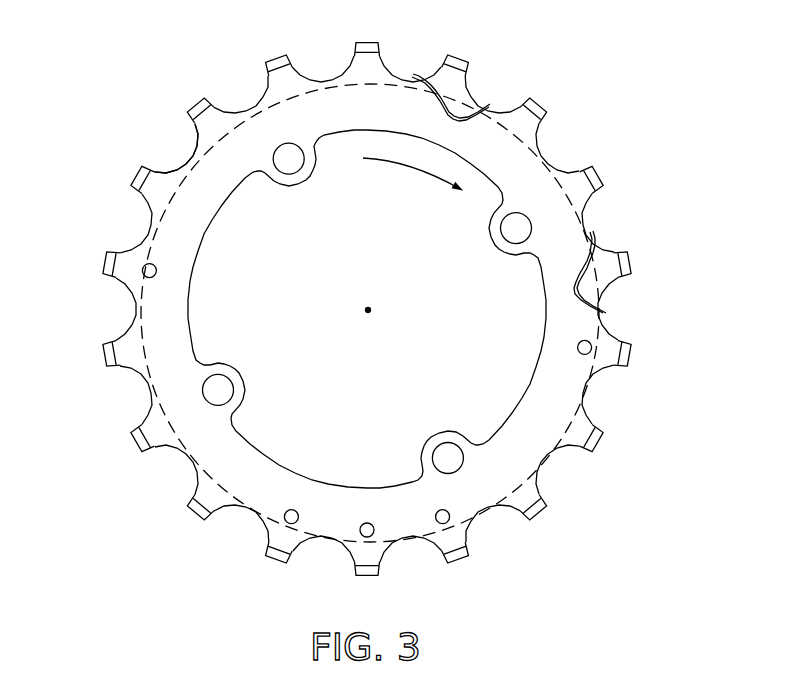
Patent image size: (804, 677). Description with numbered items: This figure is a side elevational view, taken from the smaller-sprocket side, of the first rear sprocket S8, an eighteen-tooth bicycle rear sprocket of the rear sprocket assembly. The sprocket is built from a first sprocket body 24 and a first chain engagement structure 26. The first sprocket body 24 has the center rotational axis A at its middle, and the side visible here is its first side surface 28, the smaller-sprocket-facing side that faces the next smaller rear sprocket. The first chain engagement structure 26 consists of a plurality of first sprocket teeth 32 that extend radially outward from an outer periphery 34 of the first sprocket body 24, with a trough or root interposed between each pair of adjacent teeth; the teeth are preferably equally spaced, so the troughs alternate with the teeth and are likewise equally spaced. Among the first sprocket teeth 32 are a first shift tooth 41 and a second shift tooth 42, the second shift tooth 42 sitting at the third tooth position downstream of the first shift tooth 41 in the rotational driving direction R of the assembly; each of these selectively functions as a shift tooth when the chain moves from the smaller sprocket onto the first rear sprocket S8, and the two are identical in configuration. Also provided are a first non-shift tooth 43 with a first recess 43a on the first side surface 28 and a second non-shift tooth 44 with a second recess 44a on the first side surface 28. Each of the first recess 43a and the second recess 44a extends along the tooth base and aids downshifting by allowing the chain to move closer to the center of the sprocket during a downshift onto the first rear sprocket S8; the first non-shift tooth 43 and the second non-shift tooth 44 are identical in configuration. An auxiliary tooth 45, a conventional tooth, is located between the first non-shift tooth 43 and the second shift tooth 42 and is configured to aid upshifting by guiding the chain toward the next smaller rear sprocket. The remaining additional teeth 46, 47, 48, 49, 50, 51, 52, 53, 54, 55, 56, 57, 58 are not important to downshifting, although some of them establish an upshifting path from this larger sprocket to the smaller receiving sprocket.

The first rear sprocket S8 is at (643, 100).
The first sprocket body 24 is at (196, 316).
The first chain engagement structure 26 is at (128, 297).
The first side surface 28 is at (193, 224).
The first sprocket teeth 32 is at (193, 128).
The outer periphery 34 is at (222, 490).
The first shift tooth 41 is at (375, 40).
The second shift tooth 42 is at (605, 171).
The first non-shift tooth 43 is at (471, 60).
The first recess 43a is at (446, 108).
The second non-shift tooth 44 is at (634, 264).
The second recess 44a is at (575, 294).
The auxiliary tooth 45 is at (548, 107).
The additional tooth 46 is at (634, 359).
The additional tooth 47 is at (606, 450).
The additional tooth 48 is at (546, 519).
The additional tooth 49 is at (468, 563).
The additional tooth 50 is at (366, 578).
The additional tooth 51 is at (272, 563).
The additional tooth 52 is at (192, 515).
The additional tooth 53 is at (134, 441).
The additional tooth 54 is at (102, 358).
The additional tooth 55 is at (100, 265).
The additional tooth 56 is at (134, 178).
The additional tooth 57 is at (192, 101).
The additional tooth 58 is at (273, 59).
The rotational driving direction R is at (406, 167).
The center rotational axis A is at (368, 312).